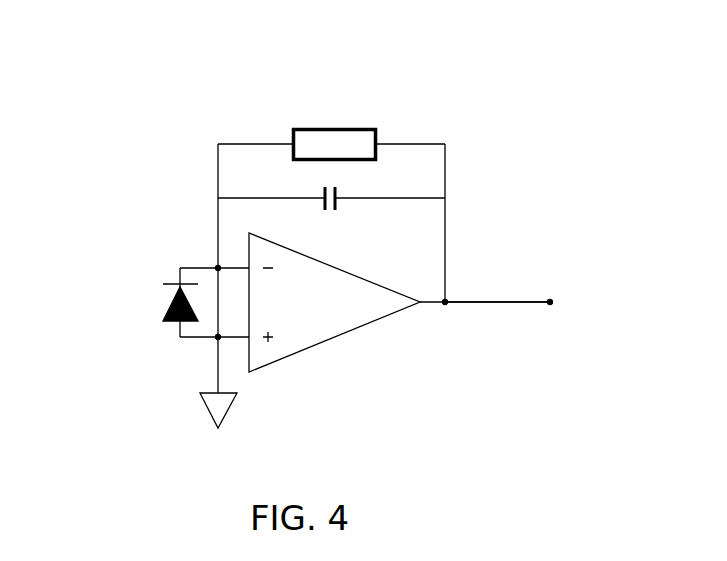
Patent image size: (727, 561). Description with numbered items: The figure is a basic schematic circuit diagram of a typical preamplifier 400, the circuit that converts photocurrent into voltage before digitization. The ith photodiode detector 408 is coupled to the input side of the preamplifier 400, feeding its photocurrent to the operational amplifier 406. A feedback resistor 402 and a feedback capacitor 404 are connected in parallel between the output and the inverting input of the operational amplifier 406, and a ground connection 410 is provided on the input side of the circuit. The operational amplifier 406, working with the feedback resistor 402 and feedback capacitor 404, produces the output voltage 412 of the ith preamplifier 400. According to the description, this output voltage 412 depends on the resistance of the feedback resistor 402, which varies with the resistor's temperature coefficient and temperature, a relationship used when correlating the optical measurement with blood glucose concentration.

The preamplifier 400 is at (479, 172).
The feedback resistor 402 is at (357, 91).
The feedback capacitor 404 is at (360, 227).
The operational amplifier 406 is at (330, 335).
The photodiode detector 408 is at (165, 341).
The ground connection 410 is at (201, 412).
The output voltage 412 is at (567, 320).